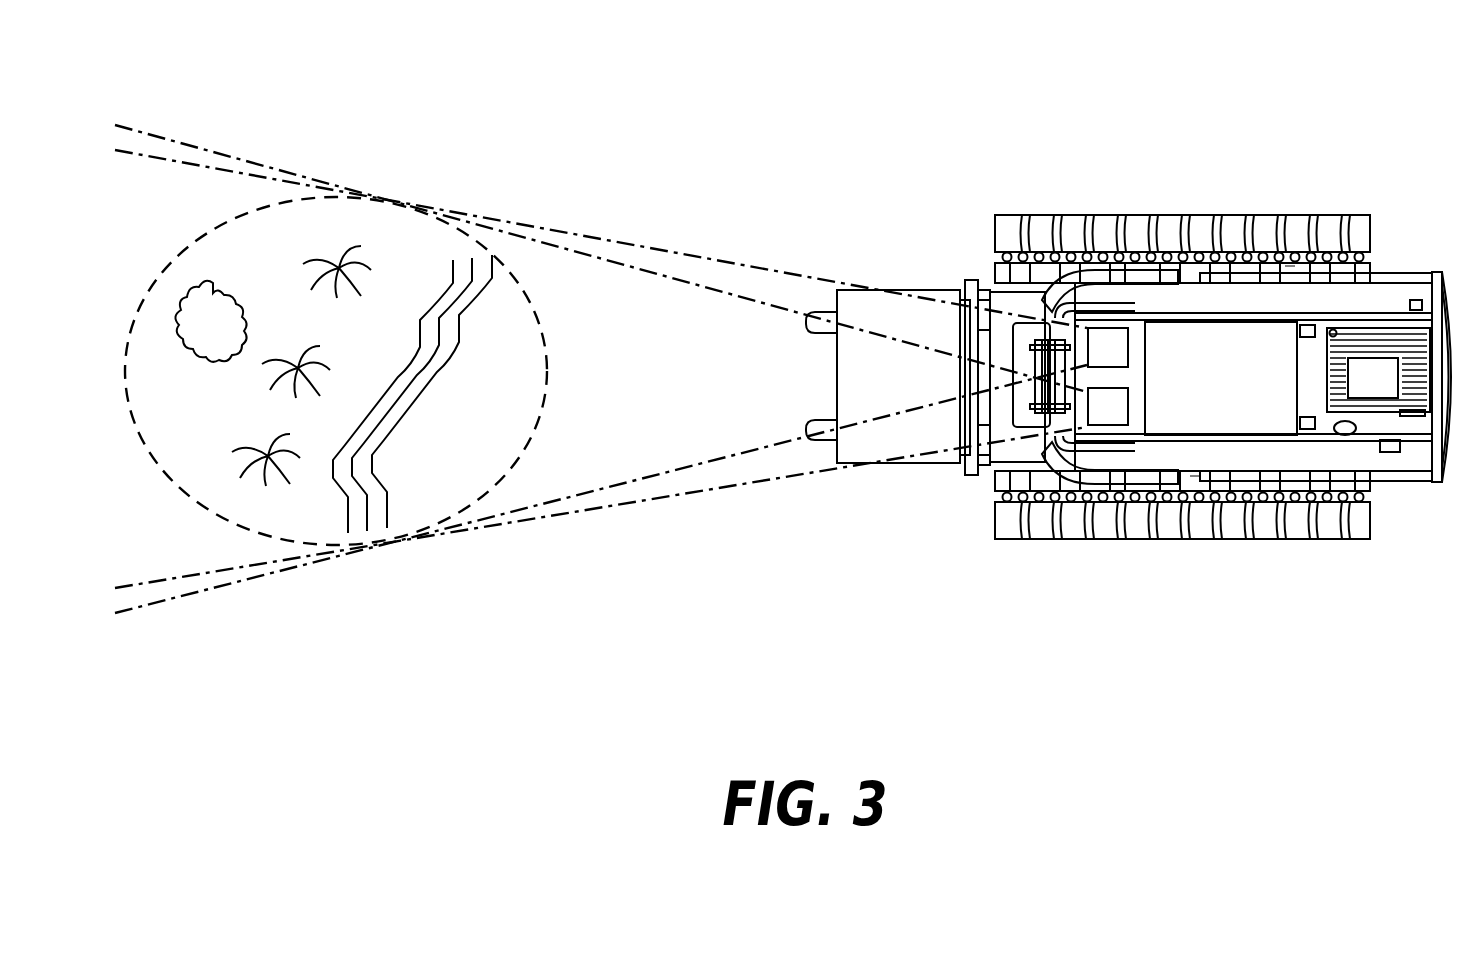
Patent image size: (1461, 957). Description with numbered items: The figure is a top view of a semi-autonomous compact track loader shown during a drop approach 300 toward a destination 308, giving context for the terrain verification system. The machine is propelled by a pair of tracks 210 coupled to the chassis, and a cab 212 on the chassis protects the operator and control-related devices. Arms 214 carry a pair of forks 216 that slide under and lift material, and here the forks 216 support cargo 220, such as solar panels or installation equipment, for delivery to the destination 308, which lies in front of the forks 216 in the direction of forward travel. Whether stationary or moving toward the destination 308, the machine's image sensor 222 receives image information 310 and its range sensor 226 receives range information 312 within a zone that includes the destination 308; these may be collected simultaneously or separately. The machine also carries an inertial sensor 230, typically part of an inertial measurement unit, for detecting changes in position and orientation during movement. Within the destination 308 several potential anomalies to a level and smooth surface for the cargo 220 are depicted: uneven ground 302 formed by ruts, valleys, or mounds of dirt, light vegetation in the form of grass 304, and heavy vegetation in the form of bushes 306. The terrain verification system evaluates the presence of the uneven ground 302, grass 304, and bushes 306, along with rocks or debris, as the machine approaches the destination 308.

The drop approach 300 is at (390, 746).
The uneven ground 302 is at (368, 520).
The grass 304 is at (349, 250).
The bushes 306 is at (213, 283).
The destination 308 is at (158, 489).
The image information 310 is at (841, 290).
The range information 312 is at (733, 295).
The tracks 210 is at (1298, 522).
The cab 212 is at (1194, 340).
The arms 214 is at (1293, 270).
The forks 216 is at (963, 433).
The cargo 220 is at (931, 290).
The image sensor 222 is at (1105, 330).
The range sensor 226 is at (1103, 428).
The inertial sensor 230 is at (1380, 360).